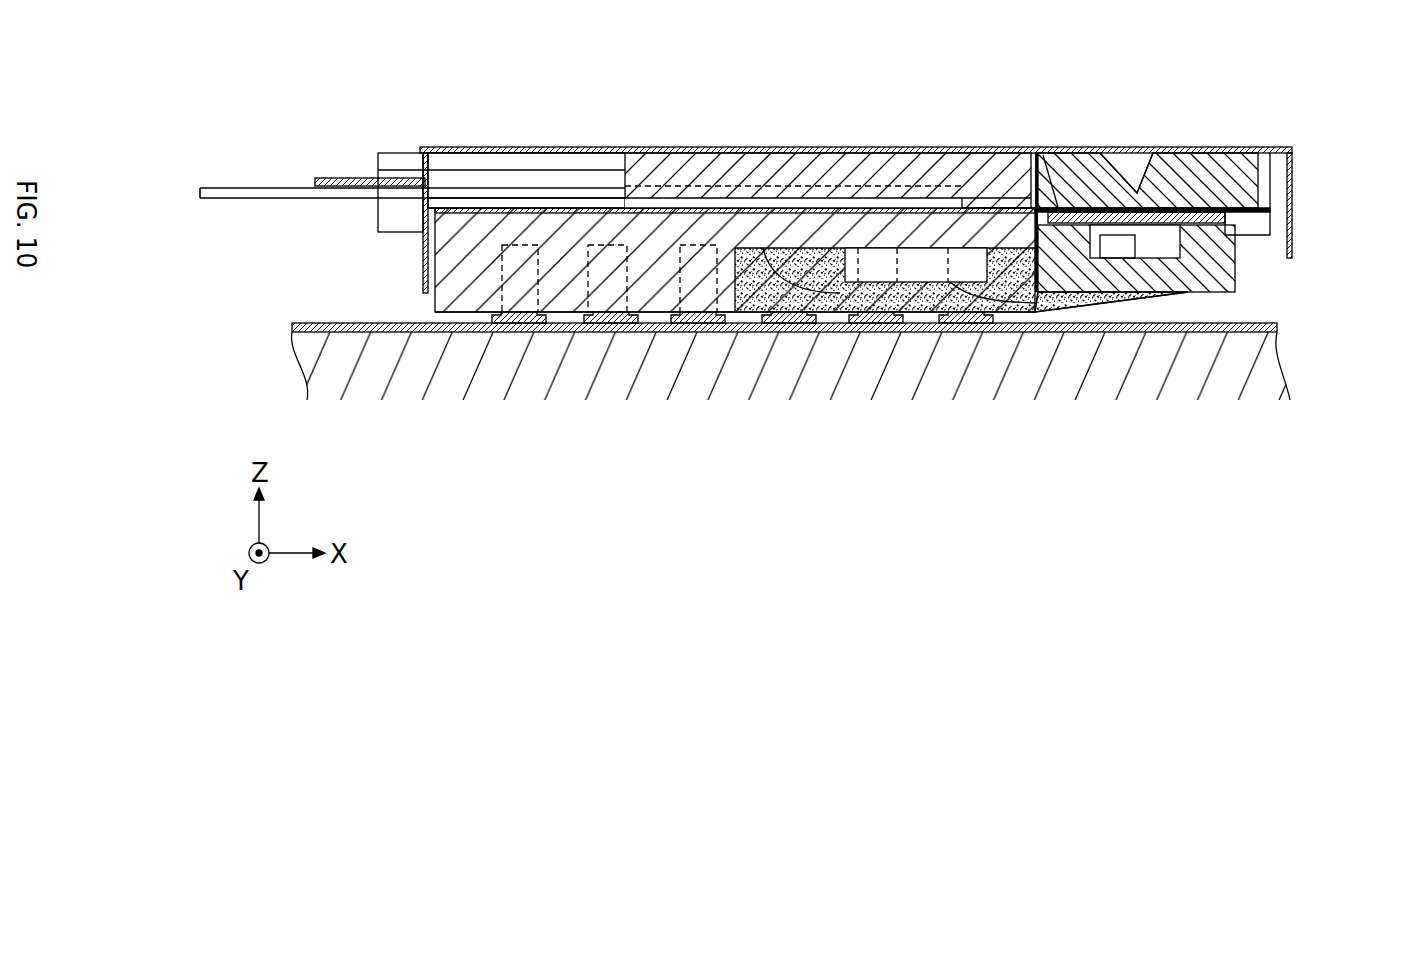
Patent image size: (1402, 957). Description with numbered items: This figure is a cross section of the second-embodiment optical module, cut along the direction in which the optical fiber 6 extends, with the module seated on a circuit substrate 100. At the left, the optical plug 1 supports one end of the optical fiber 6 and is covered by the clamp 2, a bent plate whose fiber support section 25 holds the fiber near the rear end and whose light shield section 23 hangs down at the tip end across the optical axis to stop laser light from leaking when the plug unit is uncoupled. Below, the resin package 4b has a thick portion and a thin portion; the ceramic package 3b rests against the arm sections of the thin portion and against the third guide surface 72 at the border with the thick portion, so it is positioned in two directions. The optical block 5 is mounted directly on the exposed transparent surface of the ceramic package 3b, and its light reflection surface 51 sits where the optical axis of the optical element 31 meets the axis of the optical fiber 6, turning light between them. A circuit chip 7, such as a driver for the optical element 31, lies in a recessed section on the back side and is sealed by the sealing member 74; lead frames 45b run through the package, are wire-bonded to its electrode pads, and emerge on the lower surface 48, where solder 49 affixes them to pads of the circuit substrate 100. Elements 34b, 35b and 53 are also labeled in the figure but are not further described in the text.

The optical plug 1 is at (725, 147).
The clamp 2 is at (1292, 147).
The ceramic package 3b is at (1188, 293).
The resin package 4b is at (478, 220).
The optical block 5 is at (1210, 165).
The optical fiber 6 is at (232, 188).
The circuit chip 7 is at (918, 270).
The light shield section 23 is at (1293, 222).
The fiber support section 25 is at (352, 178).
The optical element 31 is at (1120, 247).
The support block 34b is at (1237, 263).
The engagement groove 35b is at (1173, 172).
The lead frames 45b is at (612, 233).
The lower surface 48 is at (440, 312).
The solder 49 is at (607, 325).
The light reflection surface 51 is at (1115, 175).
The partition plate 53 is at (1036, 150).
The third guide surface 72 is at (1052, 305).
The sealing member 74 is at (825, 300).
The circuit substrate 100 is at (1265, 357).